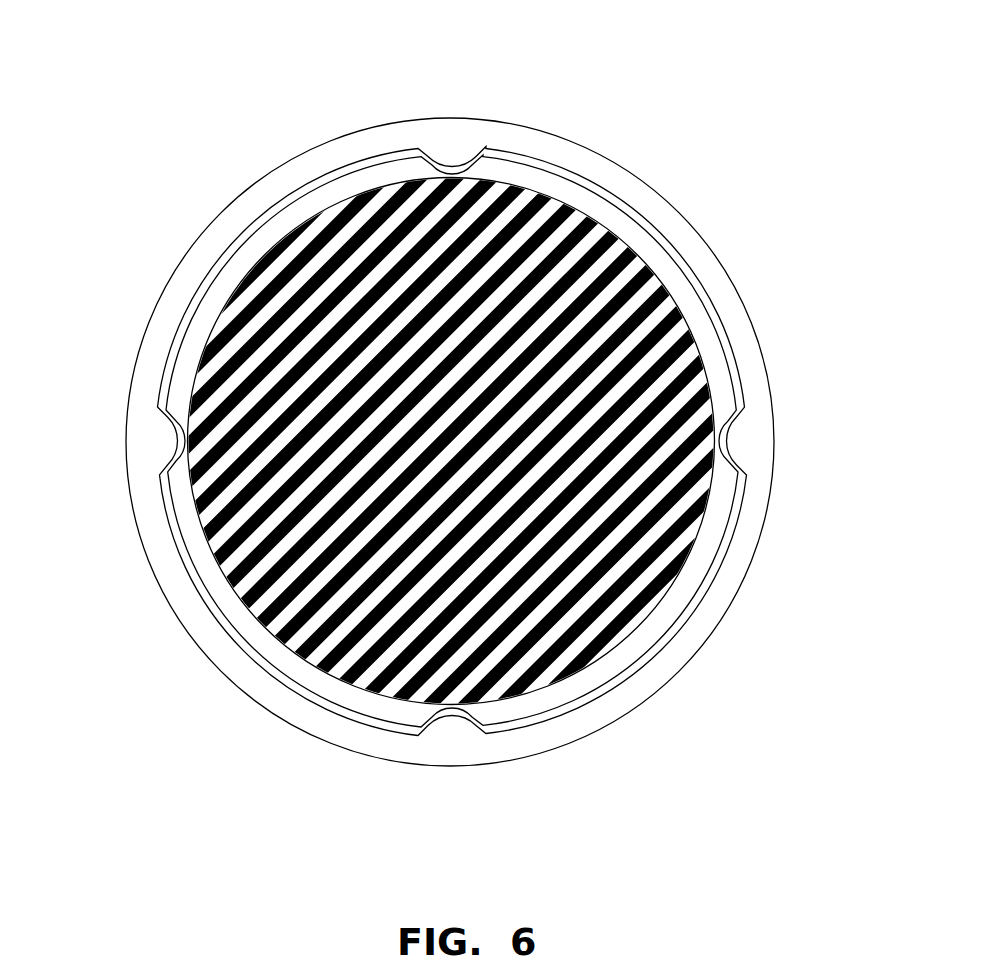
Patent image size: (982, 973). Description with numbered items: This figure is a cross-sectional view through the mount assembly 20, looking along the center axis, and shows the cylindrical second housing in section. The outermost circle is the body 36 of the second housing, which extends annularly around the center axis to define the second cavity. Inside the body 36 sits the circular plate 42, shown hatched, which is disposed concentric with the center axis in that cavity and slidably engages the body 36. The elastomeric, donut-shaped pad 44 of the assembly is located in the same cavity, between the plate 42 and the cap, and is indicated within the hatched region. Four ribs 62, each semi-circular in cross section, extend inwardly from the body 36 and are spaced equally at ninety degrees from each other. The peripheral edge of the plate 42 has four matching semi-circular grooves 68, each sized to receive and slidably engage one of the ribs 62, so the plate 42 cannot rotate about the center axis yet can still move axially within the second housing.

The mount assembly 20 is at (661, 73).
The body 36 is at (755, 322).
The plate 42 is at (613, 233).
The pad 44 is at (637, 302).
The ribs 62 is at (450, 153).
The grooves 68 is at (468, 162).